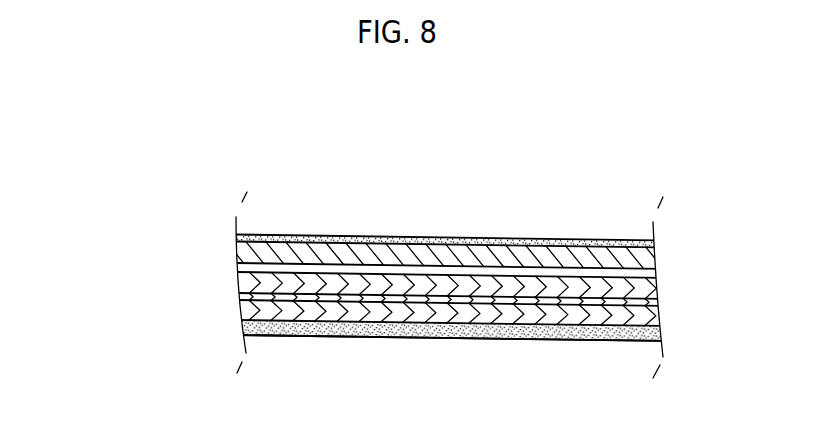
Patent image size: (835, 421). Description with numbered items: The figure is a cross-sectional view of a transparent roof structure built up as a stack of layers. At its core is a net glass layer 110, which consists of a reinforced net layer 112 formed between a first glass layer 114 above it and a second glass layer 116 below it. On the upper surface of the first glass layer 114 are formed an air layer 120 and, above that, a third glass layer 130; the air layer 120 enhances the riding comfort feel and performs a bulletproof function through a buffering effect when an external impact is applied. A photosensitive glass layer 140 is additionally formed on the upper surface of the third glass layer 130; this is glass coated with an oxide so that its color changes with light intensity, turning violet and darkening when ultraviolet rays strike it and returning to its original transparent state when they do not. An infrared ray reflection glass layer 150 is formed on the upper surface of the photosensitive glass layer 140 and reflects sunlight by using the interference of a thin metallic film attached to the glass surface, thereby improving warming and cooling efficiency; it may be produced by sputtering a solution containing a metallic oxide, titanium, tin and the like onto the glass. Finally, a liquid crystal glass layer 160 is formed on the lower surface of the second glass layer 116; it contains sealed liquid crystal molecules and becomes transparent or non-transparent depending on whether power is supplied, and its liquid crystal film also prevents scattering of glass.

The net glass layer 110 is at (95, 272).
The reinforced net layer 112 is at (240, 299).
The first glass layer 114 is at (237, 285).
The second glass layer 116 is at (244, 317).
The air layer 120 is at (643, 273).
The third glass layer 130 is at (236, 253).
The photosensitive glass layer 140 is at (653, 245).
The infrared ray reflection glass layer 150 is at (236, 237).
The liquid crystal glass layer 160 is at (662, 332).